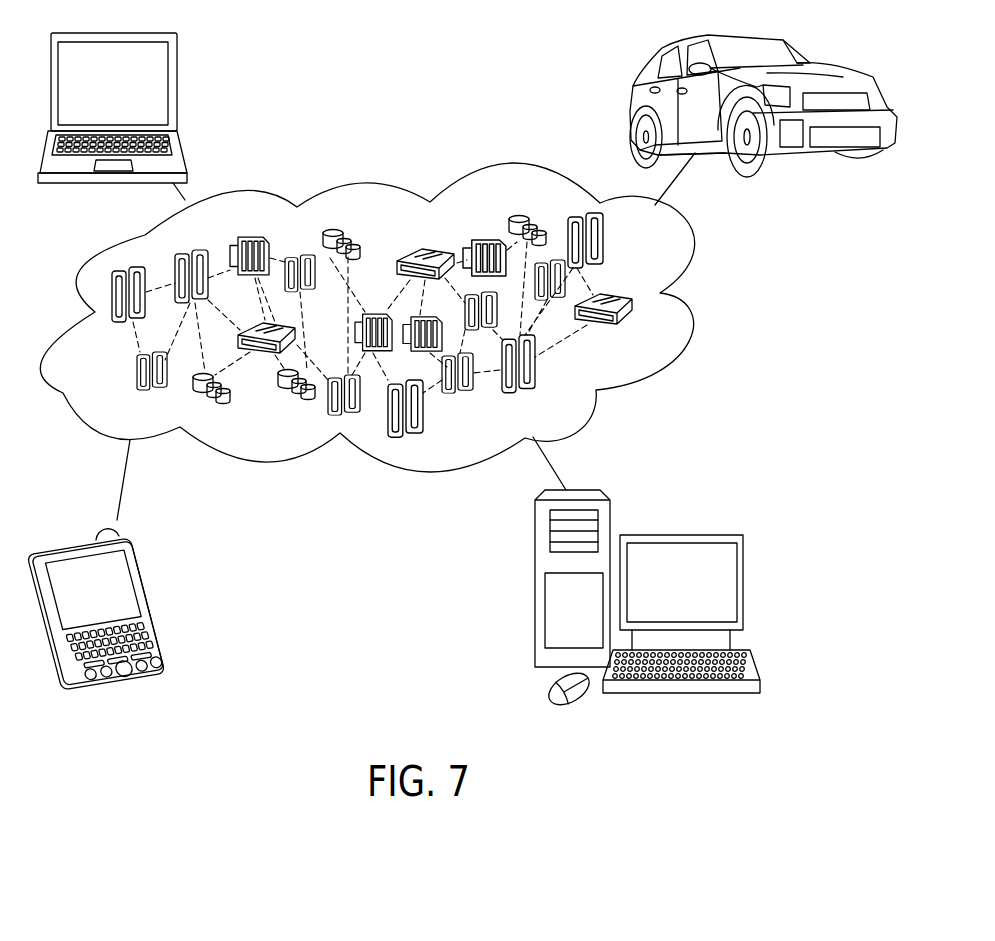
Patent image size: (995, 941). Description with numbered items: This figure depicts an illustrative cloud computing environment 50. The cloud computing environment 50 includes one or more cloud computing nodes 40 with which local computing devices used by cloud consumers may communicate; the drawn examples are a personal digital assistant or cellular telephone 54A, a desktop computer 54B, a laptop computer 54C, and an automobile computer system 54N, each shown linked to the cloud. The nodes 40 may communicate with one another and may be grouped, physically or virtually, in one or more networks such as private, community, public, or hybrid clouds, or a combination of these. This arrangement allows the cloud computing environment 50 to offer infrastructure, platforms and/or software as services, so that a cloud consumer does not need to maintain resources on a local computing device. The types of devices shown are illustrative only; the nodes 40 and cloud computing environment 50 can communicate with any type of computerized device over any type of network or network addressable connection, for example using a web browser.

The laptop computer 54C is at (177, 88).
The automobile computer system 54N is at (810, 53).
The cloud computing environment 50 is at (697, 247).
The nodes 40 is at (655, 345).
The personal digital assistant (PDA) or cellular telephone 54A is at (145, 582).
The desktop computer 54B is at (743, 582).